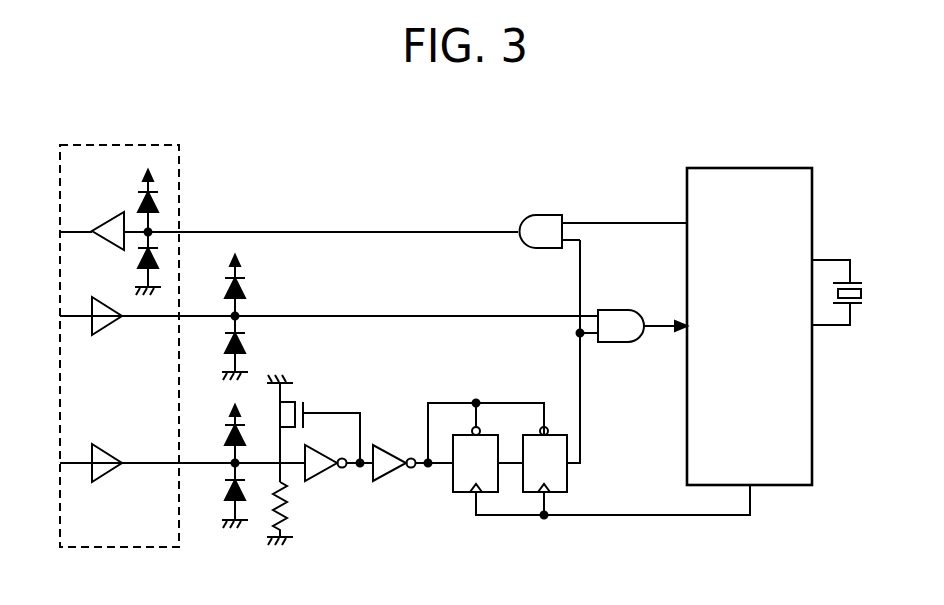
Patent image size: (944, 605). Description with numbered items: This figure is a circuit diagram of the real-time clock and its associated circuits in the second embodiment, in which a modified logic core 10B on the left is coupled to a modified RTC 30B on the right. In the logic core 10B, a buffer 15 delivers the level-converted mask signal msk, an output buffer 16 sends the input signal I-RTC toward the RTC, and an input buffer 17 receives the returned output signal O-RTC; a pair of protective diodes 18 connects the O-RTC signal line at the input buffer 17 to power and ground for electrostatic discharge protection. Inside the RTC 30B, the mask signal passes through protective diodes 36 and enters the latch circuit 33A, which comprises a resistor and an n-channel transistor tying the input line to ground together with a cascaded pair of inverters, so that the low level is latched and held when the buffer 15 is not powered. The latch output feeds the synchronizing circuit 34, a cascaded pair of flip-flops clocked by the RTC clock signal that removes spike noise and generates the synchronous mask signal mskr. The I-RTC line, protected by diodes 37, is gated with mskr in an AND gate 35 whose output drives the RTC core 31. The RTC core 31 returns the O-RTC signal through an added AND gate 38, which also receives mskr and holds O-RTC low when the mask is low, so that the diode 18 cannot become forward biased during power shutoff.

The logic core 10B is at (140, 145).
The buffer 15 is at (110, 481).
The output buffer 16 is at (108, 334).
The input buffer 17 is at (107, 218).
The protective diodes 18 is at (138, 262).
The RTC 30B is at (415, 167).
The RTC core 31 is at (786, 168).
The latch circuit 33A is at (355, 522).
The synchronizing circuit 34 is at (492, 549).
The AND gate 35 is at (617, 310).
The protective diodes 36 is at (228, 440).
The protective diodes 37 is at (241, 290).
The AND gate 38 is at (545, 215).